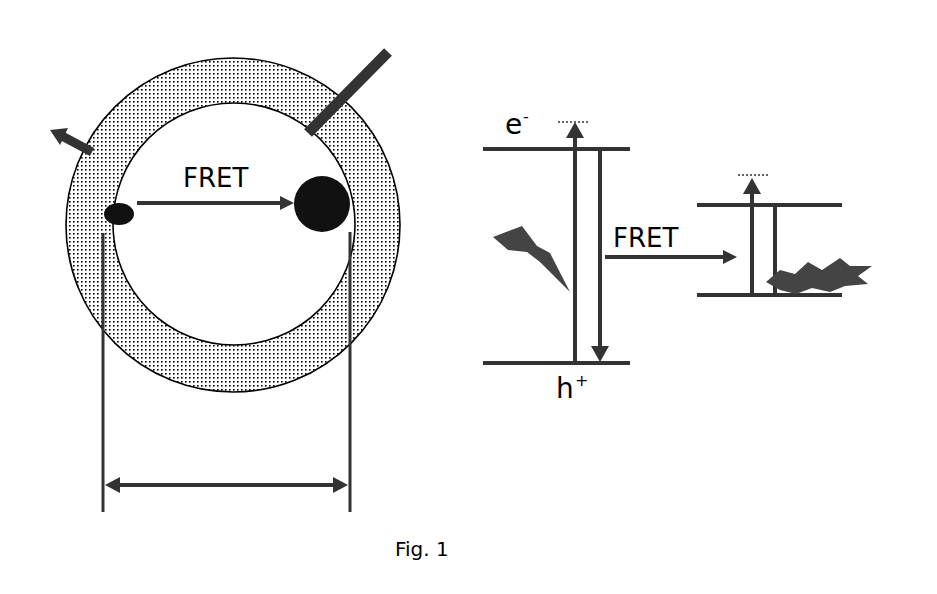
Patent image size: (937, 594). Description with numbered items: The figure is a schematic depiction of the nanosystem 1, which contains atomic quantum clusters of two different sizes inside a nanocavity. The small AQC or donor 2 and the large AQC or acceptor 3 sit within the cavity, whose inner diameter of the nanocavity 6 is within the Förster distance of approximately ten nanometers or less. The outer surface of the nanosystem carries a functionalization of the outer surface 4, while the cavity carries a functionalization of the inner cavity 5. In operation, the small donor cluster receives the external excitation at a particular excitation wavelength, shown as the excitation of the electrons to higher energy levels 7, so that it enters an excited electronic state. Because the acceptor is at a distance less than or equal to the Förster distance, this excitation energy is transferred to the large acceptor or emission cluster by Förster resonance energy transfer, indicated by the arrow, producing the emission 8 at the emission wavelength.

The nanosystem 1 is at (233, 225).
The small AQC or donor 2 is at (119, 227).
The large AQC or acceptor 3 is at (322, 217).
The functionalization of the outer surface of the nanosystem 4 is at (61, 133).
The functionalization of the inner cavity 5 is at (348, 77).
The inner diameter of the nanocavity 6 is at (226, 377).
The excitation of the electrons to higher energy levels 7 is at (522, 259).
The emission 8 is at (819, 259).